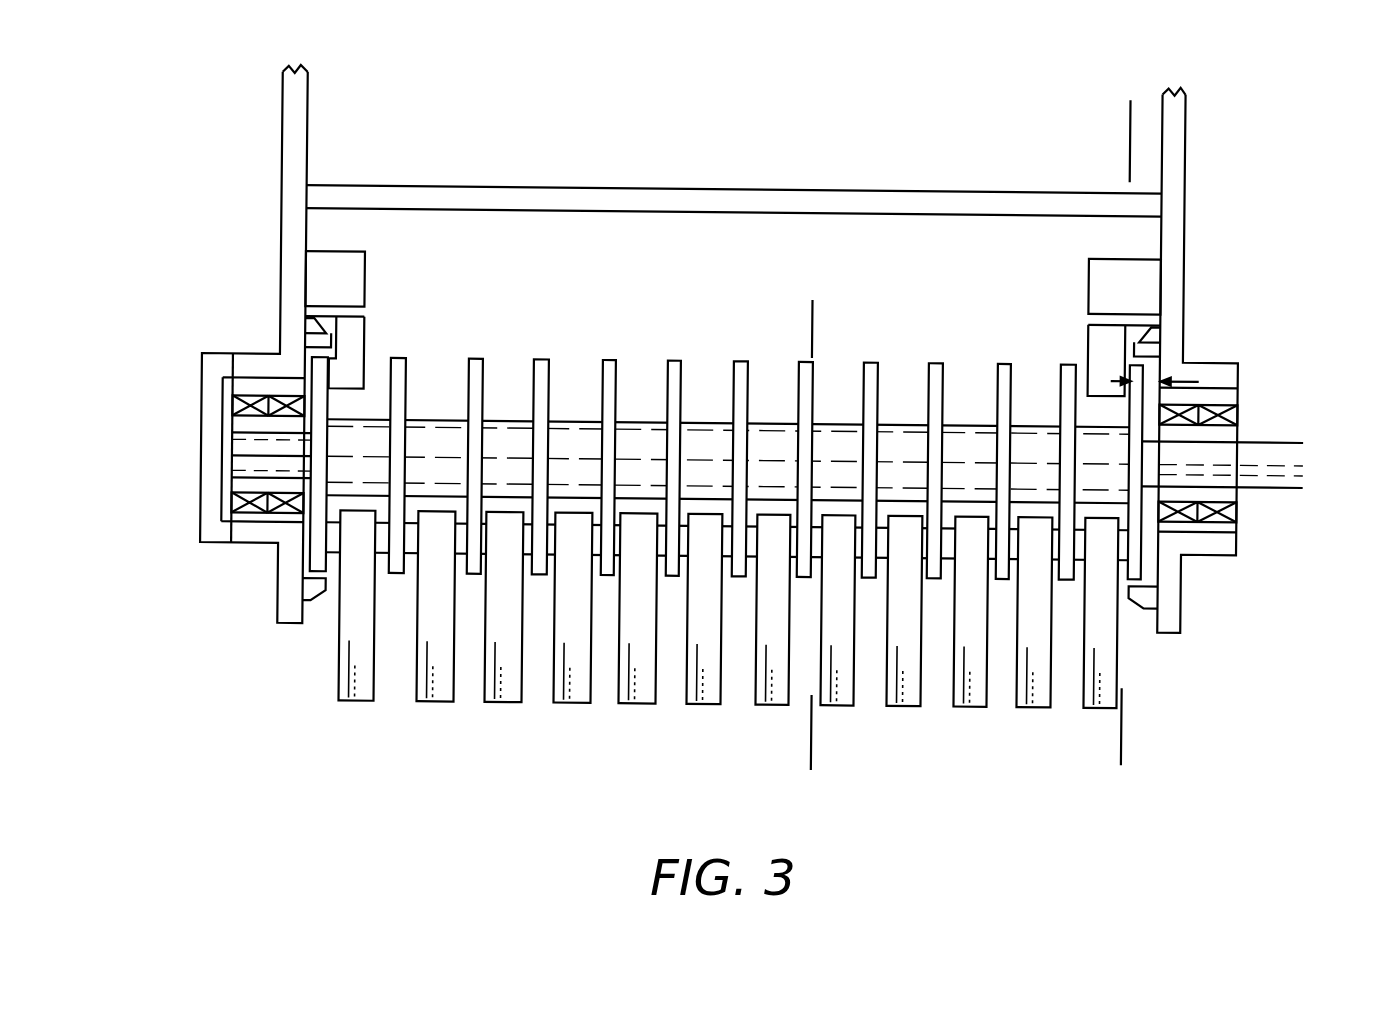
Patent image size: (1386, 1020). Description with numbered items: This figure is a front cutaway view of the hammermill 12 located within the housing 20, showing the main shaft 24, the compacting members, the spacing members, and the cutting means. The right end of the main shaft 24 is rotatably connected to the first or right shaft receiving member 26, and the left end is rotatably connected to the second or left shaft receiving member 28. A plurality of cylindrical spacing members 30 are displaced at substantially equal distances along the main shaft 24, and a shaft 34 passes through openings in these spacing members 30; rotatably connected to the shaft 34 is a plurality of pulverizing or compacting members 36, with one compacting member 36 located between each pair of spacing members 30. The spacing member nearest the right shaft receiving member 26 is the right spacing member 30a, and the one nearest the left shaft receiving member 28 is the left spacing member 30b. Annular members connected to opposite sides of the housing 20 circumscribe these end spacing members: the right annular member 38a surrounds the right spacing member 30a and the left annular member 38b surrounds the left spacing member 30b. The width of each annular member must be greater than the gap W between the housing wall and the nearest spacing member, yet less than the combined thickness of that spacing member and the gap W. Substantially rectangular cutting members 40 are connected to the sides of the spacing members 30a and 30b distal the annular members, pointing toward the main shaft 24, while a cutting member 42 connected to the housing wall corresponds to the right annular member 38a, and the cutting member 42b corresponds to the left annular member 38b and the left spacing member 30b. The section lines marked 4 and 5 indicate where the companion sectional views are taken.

The hammermill 12 is at (784, 160).
The housing 20 is at (282, 277).
The main shaft 24 is at (1270, 467).
The first or right shaft receiving member 26 is at (1252, 424).
The second or left shaft receiving member 28 is at (196, 493).
The cylindrical spacing members 30 is at (543, 355).
The first or right spacing member 30a is at (1136, 557).
The second or left spacing member 30b is at (311, 558).
The shaft 34 is at (722, 556).
The compacting members 36 is at (505, 703).
The right annular member 38a is at (1150, 339).
The left annular member 38b is at (317, 337).
The cutting members 40 is at (358, 340).
The cutting member 42 is at (1148, 282).
The cutting member 42b is at (322, 265).
The gap W is at (1198, 373).
The section line 4- 4 is at (1116, 138).
The section line 5- 5 is at (800, 320).